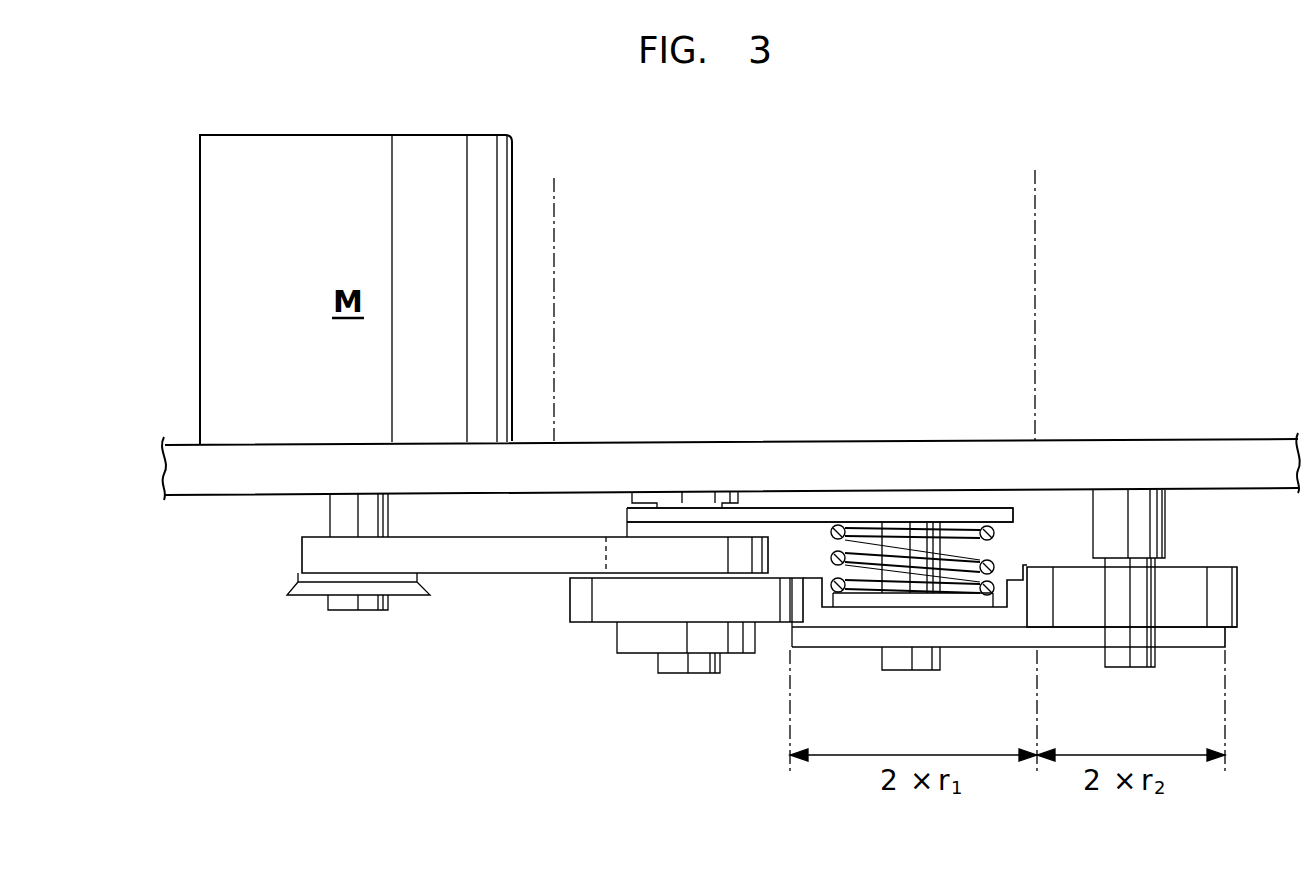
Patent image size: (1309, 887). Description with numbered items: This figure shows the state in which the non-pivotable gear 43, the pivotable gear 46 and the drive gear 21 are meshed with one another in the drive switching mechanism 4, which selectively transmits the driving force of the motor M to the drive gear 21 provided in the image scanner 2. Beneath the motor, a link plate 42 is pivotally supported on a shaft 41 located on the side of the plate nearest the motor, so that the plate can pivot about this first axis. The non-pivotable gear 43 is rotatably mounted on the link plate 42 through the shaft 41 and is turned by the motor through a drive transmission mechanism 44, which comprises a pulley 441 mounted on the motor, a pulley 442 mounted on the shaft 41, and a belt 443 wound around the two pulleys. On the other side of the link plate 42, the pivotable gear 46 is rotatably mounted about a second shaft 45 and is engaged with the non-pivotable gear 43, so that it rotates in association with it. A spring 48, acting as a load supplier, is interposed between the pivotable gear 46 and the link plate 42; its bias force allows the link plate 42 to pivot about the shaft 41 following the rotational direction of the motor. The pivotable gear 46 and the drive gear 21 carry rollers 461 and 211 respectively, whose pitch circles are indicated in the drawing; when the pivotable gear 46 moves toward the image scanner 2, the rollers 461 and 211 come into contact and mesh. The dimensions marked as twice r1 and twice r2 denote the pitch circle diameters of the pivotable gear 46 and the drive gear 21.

The image scanner 2 is at (1308, 248).
The drive switching mechanism 4 is at (1035, 251).
The drive gear 21 is at (1183, 615).
The roller 211 is at (1080, 638).
The shaft 41 is at (703, 667).
The link plate 42 is at (795, 517).
The non-pivotable gear 43 is at (652, 612).
The drive transmission mechanism 44 is at (640, 648).
The pulley 441 is at (318, 590).
The pulley 442 is at (588, 638).
The belt 443 is at (483, 565).
The shaft 45 is at (913, 662).
The pivotable gear 46 is at (843, 618).
The roller 461 is at (993, 638).
The spring 48 is at (837, 527).